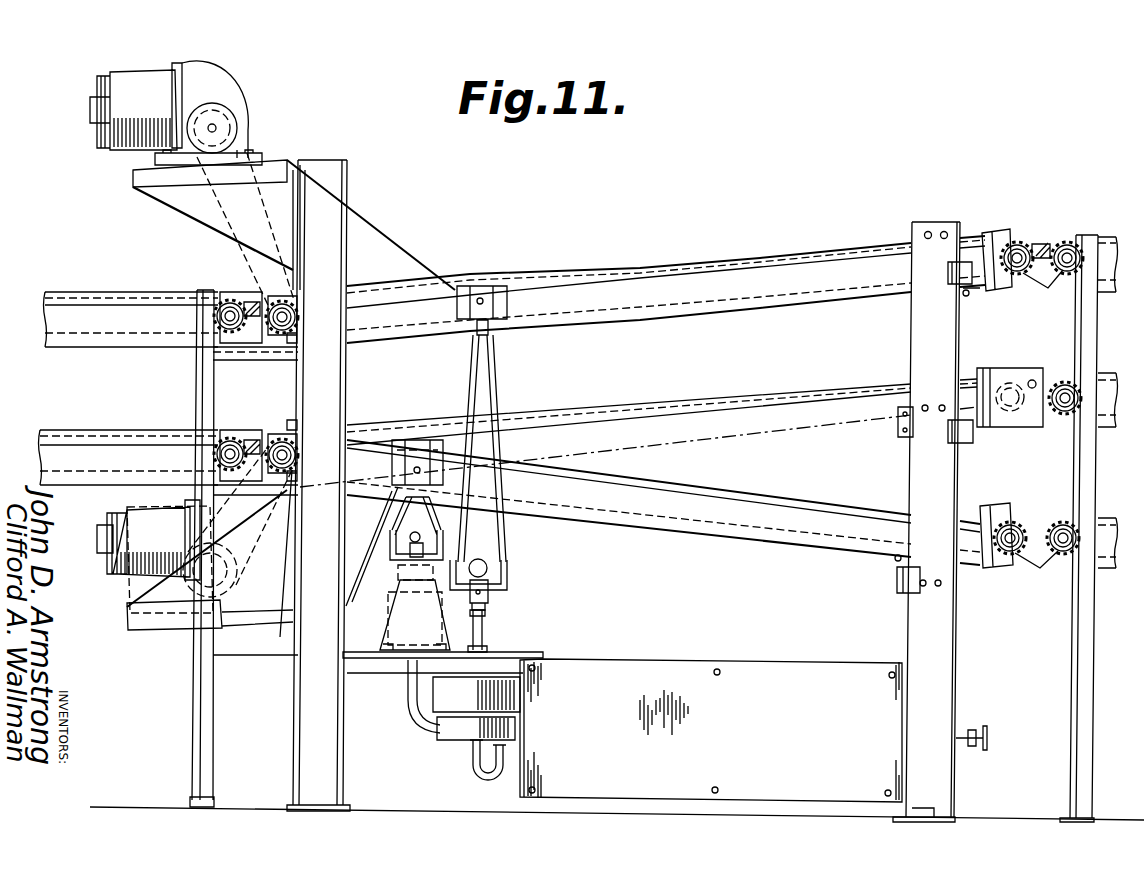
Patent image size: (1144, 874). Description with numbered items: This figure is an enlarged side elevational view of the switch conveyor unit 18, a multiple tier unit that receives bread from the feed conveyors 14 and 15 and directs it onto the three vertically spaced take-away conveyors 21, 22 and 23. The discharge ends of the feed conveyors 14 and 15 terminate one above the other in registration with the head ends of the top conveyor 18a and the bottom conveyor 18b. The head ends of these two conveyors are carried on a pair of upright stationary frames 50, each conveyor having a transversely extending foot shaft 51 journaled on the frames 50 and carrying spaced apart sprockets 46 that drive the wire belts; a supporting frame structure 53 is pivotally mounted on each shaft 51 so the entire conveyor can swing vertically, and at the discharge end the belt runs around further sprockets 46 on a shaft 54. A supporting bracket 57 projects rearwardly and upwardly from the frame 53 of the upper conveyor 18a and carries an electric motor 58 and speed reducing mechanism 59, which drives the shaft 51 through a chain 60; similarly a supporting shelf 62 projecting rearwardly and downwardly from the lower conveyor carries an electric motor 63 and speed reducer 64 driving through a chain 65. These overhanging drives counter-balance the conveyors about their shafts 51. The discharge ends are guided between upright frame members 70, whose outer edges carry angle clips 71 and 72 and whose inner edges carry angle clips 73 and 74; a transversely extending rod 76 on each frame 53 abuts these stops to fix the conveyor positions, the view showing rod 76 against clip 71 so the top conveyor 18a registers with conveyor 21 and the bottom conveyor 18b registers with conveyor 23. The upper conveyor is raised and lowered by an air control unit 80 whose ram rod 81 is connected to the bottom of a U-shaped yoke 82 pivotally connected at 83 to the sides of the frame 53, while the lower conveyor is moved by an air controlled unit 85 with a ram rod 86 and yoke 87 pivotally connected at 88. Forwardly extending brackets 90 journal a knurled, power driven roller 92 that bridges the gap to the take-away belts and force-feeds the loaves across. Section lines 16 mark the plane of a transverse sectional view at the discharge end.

The feed conveyor 14 is at (155, 287).
The feed conveyor 15 is at (155, 424).
The section line 16- 16 is at (1113, 203).
The switch conveyor unit 18 is at (798, 245).
The top conveyor 18a is at (712, 307).
The bottom conveyor 18b is at (745, 435).
The take-away conveyor 21 is at (1112, 236).
The take-away conveyor 22 is at (1110, 373).
The take-away conveyor 23 is at (1110, 525).
The sprockets 46 is at (265, 445).
The upright stationary frames 50 is at (338, 372).
The foot shaft 51 is at (283, 316).
The supporting frame structure 53 is at (655, 290).
The shaft 54 is at (1017, 272).
The supporting bracket 57 is at (133, 175).
The electric motor 58 is at (133, 78).
The speed reducing mechanism 59 is at (220, 83).
The chain 60 is at (255, 165).
The supporting shelf 62 is at (147, 620).
The electric motor 63 is at (127, 513).
The speed reducer 64 is at (272, 535).
The chain 65 is at (215, 515).
The upright frame members 70 is at (943, 343).
The angle clip 71 is at (970, 293).
The angle clip 72 is at (976, 428).
The angle clip 73 is at (897, 425).
The angle clip 74 is at (895, 574).
The transversely extending rod 76 is at (960, 295).
The air control unit 80 is at (497, 697).
The rod 81 is at (482, 632).
The yoke 82 is at (494, 400).
The pivotal connection 83 is at (483, 297).
The air controlled unit 85 is at (390, 587).
The ram rod 86 is at (435, 568).
The yoke 87 is at (427, 518).
The pivotal connection 88 is at (417, 466).
The brackets 90 is at (1027, 237).
The roller 92 is at (1055, 220).